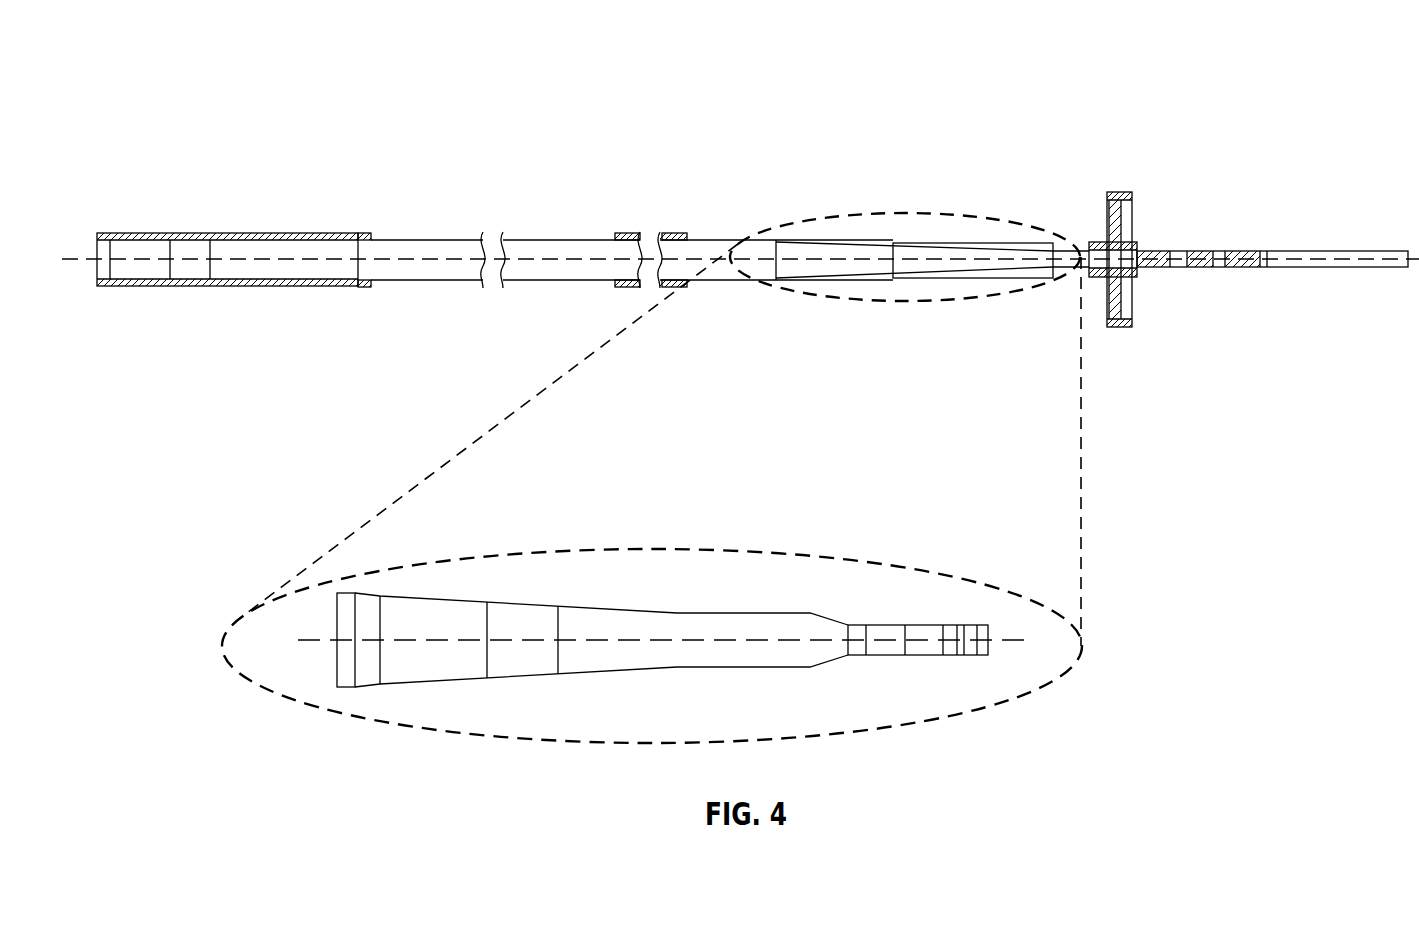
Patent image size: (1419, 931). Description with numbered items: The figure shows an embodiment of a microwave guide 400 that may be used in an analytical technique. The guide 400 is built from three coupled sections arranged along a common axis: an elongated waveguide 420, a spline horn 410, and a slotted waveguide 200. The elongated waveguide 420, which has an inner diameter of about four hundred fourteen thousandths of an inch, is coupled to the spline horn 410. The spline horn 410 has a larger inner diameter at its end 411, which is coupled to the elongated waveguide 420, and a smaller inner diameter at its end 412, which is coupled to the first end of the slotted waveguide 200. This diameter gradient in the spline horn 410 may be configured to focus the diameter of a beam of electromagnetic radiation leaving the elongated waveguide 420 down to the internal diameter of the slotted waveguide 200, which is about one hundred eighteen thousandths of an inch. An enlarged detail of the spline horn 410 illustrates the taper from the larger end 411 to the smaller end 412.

The microwave guide 400 is at (212, 86).
The elongated waveguide 420 is at (258, 247).
The spline horn 410 is at (878, 252).
The end 411 is at (400, 578).
The end 412 is at (978, 600).
The slotted waveguide 200 is at (1315, 258).